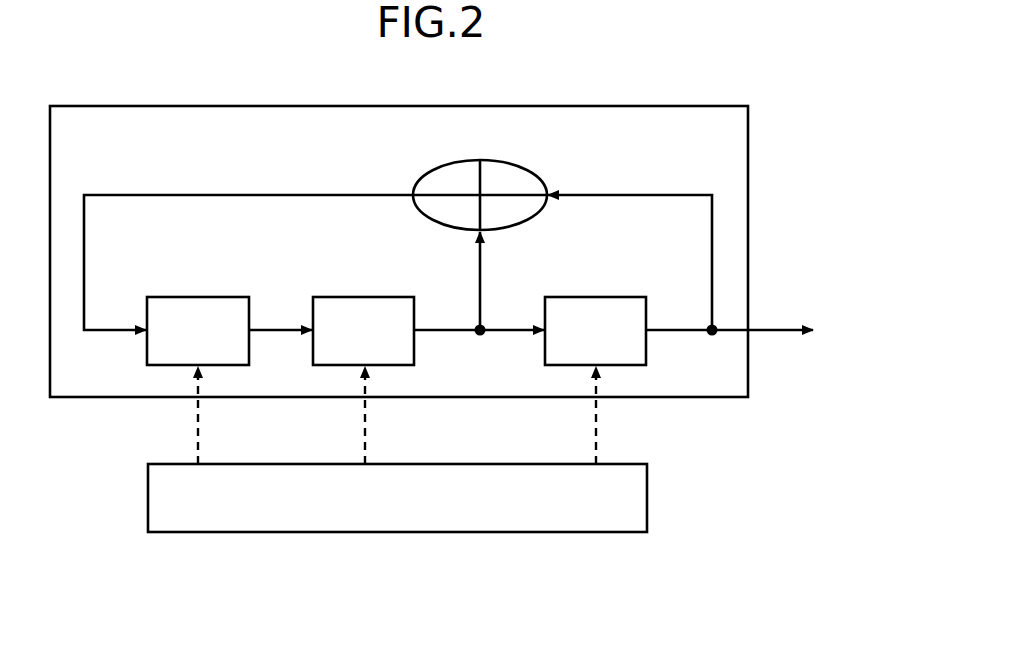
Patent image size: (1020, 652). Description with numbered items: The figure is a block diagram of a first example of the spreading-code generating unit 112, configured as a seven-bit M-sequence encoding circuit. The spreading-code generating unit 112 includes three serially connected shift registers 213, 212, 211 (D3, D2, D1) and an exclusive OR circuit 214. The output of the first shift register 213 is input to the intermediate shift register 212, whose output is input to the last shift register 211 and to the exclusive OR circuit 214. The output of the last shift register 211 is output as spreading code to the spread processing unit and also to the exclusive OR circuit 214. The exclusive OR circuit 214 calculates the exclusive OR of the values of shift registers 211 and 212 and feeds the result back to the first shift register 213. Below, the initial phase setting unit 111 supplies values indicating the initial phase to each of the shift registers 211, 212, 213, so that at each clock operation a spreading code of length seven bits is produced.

The spreading-code generating unit 112 is at (697, 106).
The exclusive OR circuit 214 is at (481, 160).
The shift register 213 is at (197, 297).
The shift register 212 is at (363, 297).
The shift register 211 is at (593, 297).
The initial phase setting unit 111 is at (473, 464).